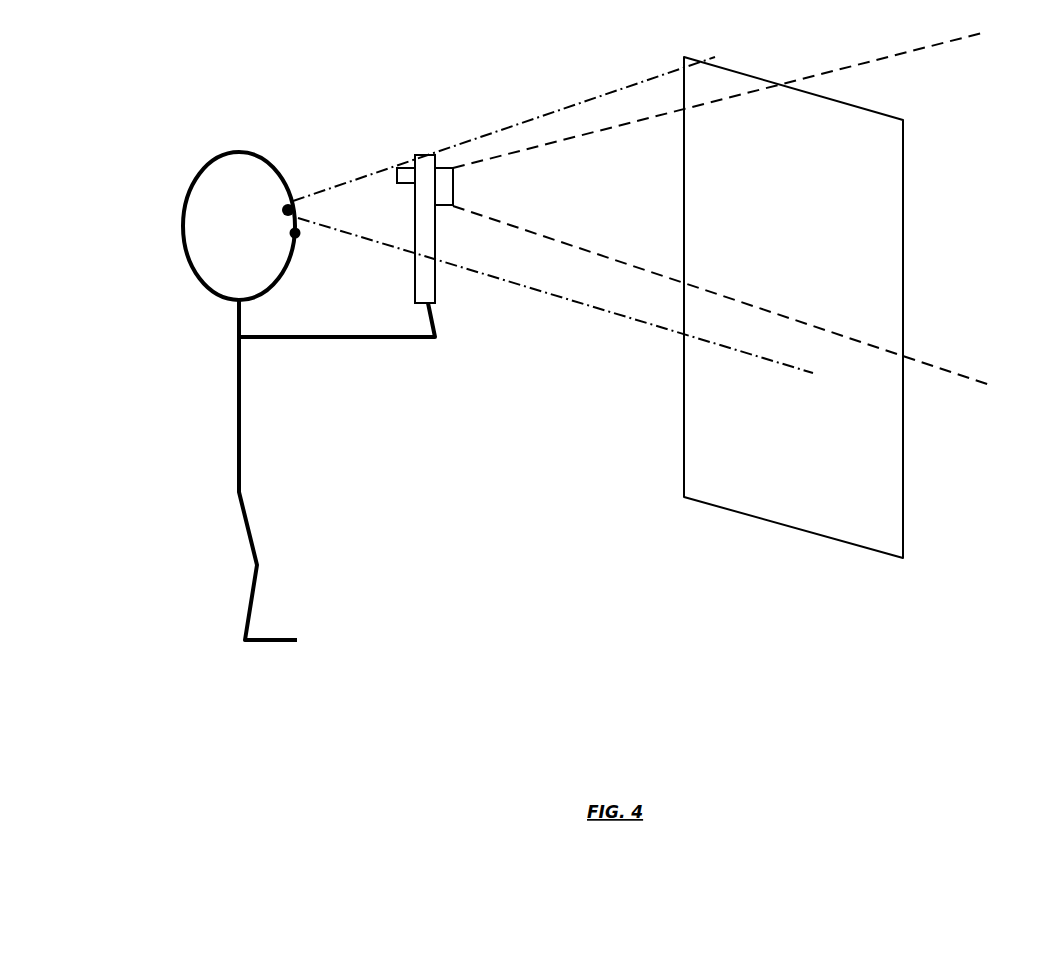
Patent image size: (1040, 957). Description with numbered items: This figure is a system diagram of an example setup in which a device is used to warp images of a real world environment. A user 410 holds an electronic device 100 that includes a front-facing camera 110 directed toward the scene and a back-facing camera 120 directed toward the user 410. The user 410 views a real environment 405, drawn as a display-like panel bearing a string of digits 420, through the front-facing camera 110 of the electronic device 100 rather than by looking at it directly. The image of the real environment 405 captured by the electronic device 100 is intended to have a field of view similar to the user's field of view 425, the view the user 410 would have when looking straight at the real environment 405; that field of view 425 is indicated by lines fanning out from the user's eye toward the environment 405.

The electronic device 100 is at (452, 182).
The front-facing camera 110 is at (716, 209).
The back-facing camera 120 is at (370, 225).
The real environment 405 is at (836, 307).
The user 410 is at (287, 221).
The displayed content 420 is at (858, 280).
The user's field of view 425 is at (553, 215).